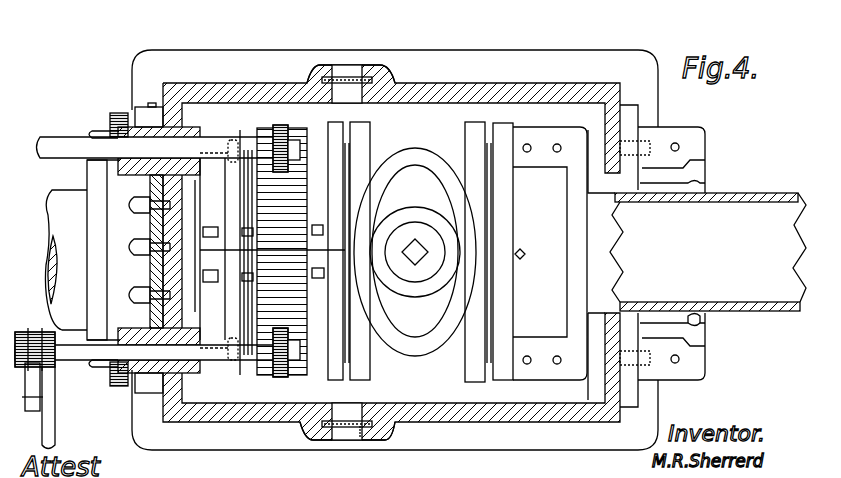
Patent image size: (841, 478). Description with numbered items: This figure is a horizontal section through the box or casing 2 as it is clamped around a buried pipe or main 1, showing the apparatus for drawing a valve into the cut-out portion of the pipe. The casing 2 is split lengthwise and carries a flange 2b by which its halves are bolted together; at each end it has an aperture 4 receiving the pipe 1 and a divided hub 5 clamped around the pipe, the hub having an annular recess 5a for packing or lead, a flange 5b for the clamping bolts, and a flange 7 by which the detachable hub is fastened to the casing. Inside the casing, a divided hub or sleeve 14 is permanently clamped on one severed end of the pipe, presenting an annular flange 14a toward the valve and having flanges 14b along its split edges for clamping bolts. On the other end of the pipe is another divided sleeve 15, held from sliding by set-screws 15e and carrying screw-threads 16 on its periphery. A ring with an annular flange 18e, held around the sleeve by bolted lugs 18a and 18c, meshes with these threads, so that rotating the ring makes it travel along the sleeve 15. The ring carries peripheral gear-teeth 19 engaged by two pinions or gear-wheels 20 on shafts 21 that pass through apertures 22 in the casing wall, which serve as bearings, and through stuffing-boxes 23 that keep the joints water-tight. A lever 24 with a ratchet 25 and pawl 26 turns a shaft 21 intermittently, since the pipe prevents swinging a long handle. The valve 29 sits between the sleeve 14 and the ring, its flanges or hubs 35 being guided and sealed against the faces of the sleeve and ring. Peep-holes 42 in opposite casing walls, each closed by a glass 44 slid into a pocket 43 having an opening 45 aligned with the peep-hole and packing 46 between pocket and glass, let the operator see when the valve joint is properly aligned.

The pipe or main 1 is at (680, 230).
The box or casing 2 is at (391, 256).
The flange 2b is at (395, 250).
The aperture 4 is at (612, 184).
The hub 5 is at (720, 161).
The annular recess 5a is at (690, 320).
The flange 5b is at (694, 137).
The flange 7 is at (153, 107).
The divided hub or sleeve 14 is at (550, 253).
The annular flange 14a is at (498, 187).
The flange 14b is at (531, 136).
The divided sleeve 15 is at (233, 210).
The set-screw 15e is at (234, 148).
The screw-threads 16 is at (245, 181).
The lug 18a is at (313, 225).
The lug 18c is at (272, 260).
The annular flange 18e is at (336, 130).
The peripheral gear-teeth 19 is at (282, 251).
The pinion or gear-wheel 20 is at (276, 383).
The shaft 21 is at (52, 143).
The aperture 22 is at (200, 134).
The stuffing-box 23 is at (113, 124).
The lever 24 is at (62, 408).
The ratchet 25 is at (34, 341).
The pawl 26 is at (27, 391).
The valve 29 is at (415, 252).
The flange or hub of valve 35 is at (370, 137).
The peep-hole 42 is at (366, 410).
The pocket 43 is at (318, 436).
The glass 44 is at (350, 77).
The opening 45 is at (360, 438).
The packing 46 is at (384, 69).